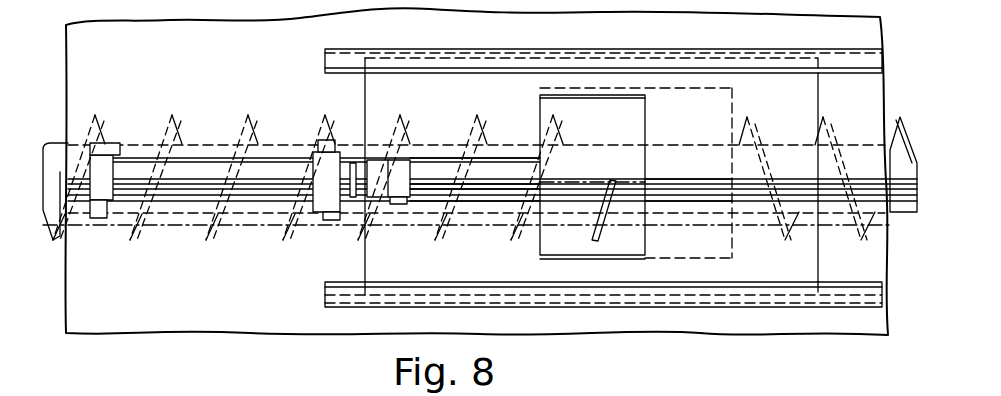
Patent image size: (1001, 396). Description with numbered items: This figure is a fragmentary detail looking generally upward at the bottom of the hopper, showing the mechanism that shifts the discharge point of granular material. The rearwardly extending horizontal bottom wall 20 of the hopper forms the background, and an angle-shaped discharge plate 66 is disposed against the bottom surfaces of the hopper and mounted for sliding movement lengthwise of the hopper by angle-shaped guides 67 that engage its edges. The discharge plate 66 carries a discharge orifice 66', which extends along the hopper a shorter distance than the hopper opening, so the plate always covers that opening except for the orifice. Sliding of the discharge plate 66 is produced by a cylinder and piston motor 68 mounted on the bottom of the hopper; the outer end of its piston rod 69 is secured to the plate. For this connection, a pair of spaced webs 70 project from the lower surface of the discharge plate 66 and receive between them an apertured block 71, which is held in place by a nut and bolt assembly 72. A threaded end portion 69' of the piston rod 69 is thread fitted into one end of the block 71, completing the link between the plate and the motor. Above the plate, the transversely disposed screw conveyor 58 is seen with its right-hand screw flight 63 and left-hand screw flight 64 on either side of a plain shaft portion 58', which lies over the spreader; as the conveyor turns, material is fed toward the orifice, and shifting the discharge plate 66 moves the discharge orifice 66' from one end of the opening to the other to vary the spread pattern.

The bottom wall 20 is at (877, 262).
The screw conveyor 58 is at (828, 161).
The plain shaft portion 58' is at (636, 173).
The right-hand screw flight 63 is at (790, 225).
The left-hand screw flight 64 is at (597, 222).
The discharge plate 66 is at (326, 176).
The discharge orifice 66' is at (683, 173).
The angle-shaped guides 67 is at (490, 65).
The cylinder and piston motor 68 is at (197, 170).
The piston rod 69 is at (332, 201).
The threaded end portion 69' is at (308, 161).
The spaced webs 70 is at (502, 160).
The apertured block 71 is at (415, 173).
The nut and bolt assembly 72 is at (400, 157).